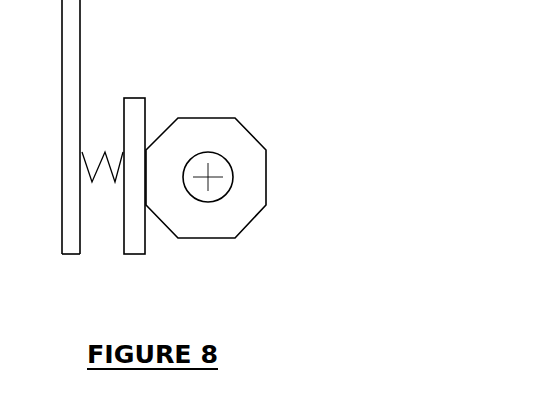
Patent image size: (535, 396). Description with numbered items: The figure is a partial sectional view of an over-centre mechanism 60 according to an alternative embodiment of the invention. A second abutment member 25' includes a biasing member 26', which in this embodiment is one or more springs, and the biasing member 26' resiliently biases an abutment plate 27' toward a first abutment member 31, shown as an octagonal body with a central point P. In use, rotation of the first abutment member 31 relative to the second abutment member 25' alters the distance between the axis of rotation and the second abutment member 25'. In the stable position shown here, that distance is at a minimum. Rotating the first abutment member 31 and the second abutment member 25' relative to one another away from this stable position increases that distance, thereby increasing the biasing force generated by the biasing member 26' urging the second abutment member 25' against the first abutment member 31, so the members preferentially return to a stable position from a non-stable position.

The second abutment member 25' is at (100, 157).
The biasing member 26' is at (122, 96).
The abutment plate 27' is at (175, 149).
The first abutment member 31 is at (238, 209).
The pivot point P is at (210, 177).
The over-centre mechanism 60 is at (277, 160).